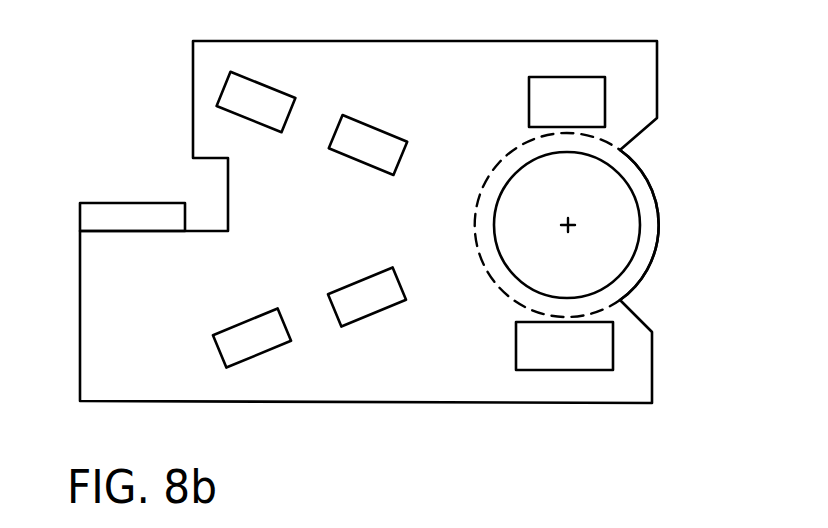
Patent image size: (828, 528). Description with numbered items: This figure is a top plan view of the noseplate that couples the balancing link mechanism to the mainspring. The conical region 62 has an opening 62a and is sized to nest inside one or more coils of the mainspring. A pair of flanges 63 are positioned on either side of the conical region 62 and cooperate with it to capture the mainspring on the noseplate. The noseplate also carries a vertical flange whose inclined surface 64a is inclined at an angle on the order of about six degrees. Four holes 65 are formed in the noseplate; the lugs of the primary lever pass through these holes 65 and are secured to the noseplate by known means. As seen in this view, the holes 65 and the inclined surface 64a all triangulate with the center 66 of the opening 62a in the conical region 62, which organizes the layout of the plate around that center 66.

The conical region 62 is at (632, 170).
The opening 62a is at (610, 247).
The flanges 63 is at (563, 80).
The inclined surface 64a is at (133, 210).
The holes 65 is at (275, 103).
The center 66 is at (572, 220).